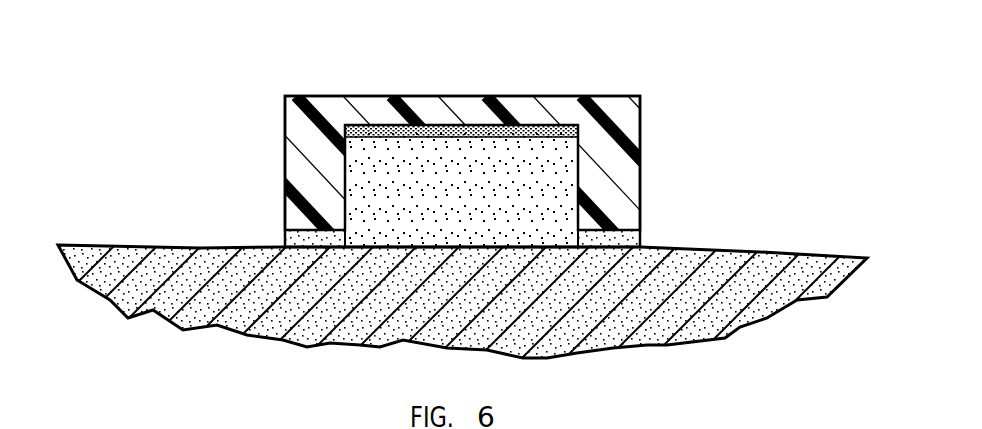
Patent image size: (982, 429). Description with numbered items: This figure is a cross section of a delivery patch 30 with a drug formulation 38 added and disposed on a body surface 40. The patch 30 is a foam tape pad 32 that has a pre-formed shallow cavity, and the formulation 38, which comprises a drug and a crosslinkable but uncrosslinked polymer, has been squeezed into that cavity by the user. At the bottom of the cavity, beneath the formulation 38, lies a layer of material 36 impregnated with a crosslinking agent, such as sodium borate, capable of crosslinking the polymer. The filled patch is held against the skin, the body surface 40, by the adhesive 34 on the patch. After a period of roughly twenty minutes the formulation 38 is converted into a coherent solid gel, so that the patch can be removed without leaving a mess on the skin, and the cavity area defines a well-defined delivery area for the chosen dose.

The semiconductor device assembly 30 is at (660, 62).
The encapsulant / package body 32 is at (297, 163).
The adhesive / bond pads 34 is at (292, 232).
The top layer / coating on die 36 is at (527, 132).
The drug formulation 38 is at (458, 185).
The body surface 40 is at (607, 335).